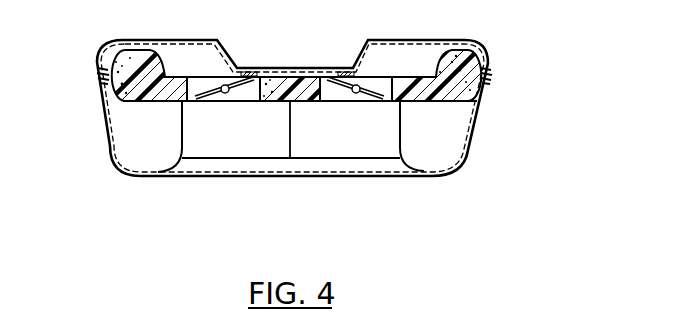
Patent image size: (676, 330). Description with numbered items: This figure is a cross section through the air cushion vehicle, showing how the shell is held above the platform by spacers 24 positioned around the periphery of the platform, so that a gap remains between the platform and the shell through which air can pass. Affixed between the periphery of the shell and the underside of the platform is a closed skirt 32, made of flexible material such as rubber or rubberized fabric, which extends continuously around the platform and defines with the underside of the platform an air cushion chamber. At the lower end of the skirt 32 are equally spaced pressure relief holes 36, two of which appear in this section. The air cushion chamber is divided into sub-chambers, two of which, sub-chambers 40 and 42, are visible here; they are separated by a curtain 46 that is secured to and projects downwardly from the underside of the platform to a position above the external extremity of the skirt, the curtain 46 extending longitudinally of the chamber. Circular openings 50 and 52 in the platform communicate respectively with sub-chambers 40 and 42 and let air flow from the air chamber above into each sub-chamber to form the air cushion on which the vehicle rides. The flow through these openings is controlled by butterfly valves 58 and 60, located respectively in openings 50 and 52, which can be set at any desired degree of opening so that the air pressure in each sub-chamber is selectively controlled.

The spacers 24 is at (100, 80).
The closed skirt 32 is at (123, 167).
The pressure relief holes 36 is at (153, 173).
The sub-chamber 40 is at (343, 155).
The sub-chamber 42 is at (212, 150).
The curtain 46 is at (296, 152).
The circular opening 50 is at (390, 92).
The circular opening 52 is at (203, 77).
The butterfly valve 58 is at (365, 101).
The butterfly valve 60 is at (213, 101).